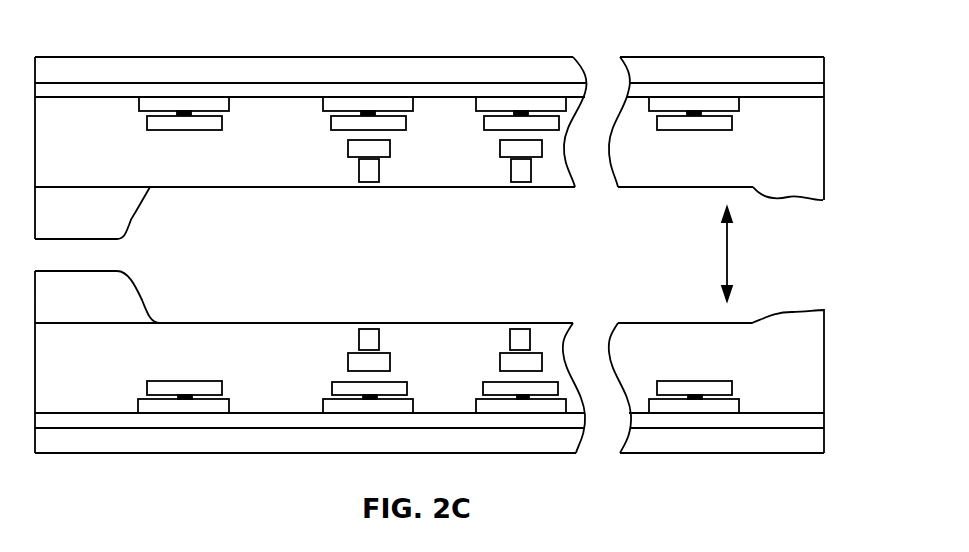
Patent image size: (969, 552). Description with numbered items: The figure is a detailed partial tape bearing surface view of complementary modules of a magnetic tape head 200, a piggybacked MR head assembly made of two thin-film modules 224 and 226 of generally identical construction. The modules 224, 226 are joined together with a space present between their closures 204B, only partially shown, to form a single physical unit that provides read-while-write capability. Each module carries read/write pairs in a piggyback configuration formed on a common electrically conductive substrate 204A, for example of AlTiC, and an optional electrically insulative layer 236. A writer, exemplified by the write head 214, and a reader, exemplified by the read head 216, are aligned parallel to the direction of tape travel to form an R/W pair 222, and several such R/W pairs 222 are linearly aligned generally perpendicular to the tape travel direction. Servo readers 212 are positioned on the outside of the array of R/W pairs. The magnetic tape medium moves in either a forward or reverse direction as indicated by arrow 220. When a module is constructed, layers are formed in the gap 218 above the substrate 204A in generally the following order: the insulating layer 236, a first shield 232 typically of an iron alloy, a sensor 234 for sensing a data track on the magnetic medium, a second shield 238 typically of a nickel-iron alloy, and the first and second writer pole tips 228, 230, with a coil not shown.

The magnetic tape head 200 is at (311, 122).
The substrate 204A is at (311, 148).
The closure 204B is at (429, 339).
The servo reader 212 is at (224, 374).
The write head 214 is at (361, 328).
The read head 216 is at (353, 380).
The gap 218 is at (230, 187).
The arrow 220 is at (727, 258).
The R/W pair 222 is at (353, 333).
The thin-film module 224 is at (750, 57).
The thin-film module 226 is at (733, 453).
The first writer pole tip 228 is at (348, 363).
The second writer pole tip 230 is at (359, 340).
The first shield 232 is at (325, 407).
The sensor 234 is at (326, 394).
The insulating layer 236 is at (813, 407).
The second shield 238 is at (330, 387).